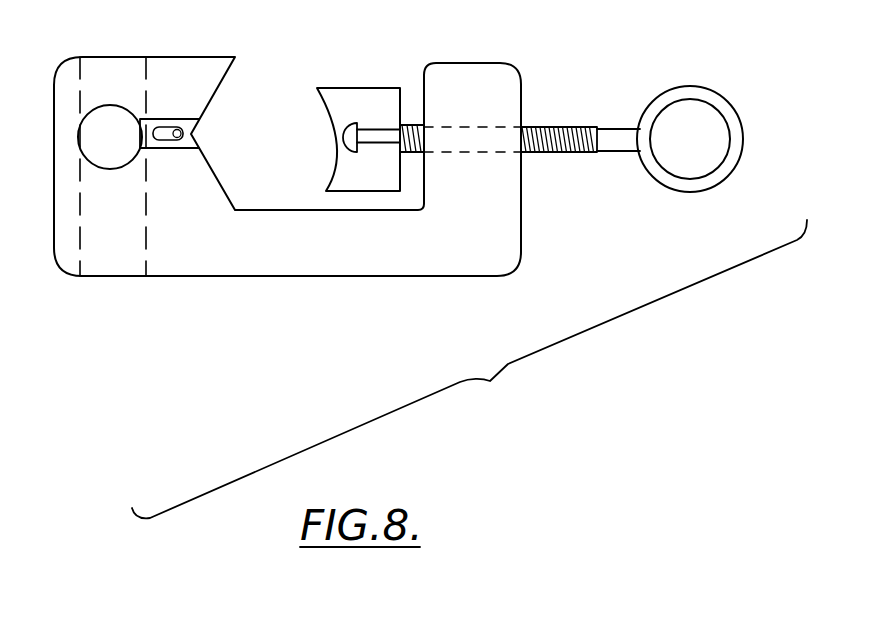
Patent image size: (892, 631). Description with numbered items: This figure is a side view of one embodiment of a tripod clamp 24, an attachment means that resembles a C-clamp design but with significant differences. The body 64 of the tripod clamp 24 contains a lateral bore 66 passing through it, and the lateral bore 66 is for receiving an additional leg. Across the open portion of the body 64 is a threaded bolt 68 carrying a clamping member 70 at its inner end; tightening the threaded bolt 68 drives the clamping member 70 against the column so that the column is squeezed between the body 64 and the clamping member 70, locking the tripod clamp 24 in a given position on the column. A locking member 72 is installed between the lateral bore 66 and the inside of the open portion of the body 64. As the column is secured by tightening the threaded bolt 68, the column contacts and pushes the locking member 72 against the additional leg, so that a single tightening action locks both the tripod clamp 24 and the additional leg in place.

The tripod clamp 24 is at (469, 369).
The body 64 is at (187, 205).
The lateral bore 66 is at (108, 130).
The threaded bolt 68 is at (573, 153).
The clamping member 70 is at (360, 102).
The locking member 72 is at (168, 145).